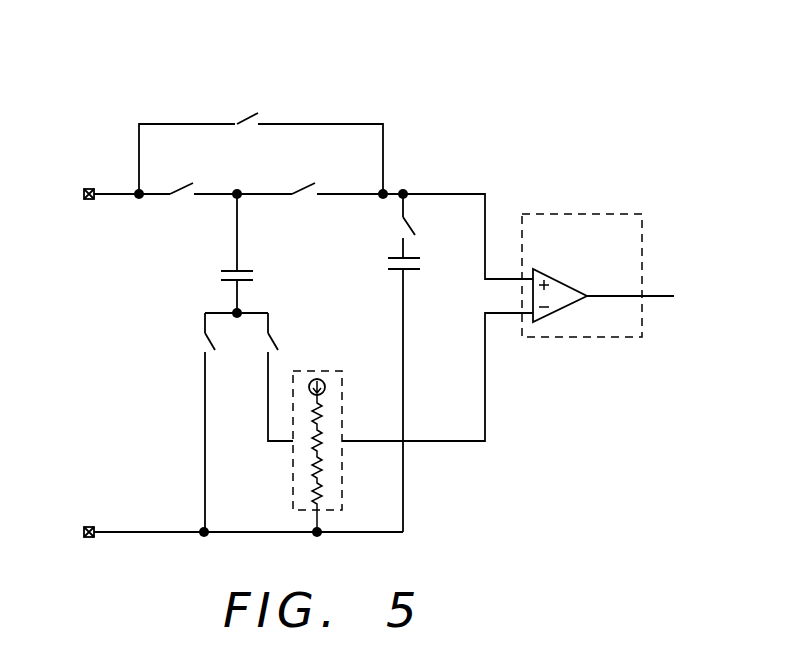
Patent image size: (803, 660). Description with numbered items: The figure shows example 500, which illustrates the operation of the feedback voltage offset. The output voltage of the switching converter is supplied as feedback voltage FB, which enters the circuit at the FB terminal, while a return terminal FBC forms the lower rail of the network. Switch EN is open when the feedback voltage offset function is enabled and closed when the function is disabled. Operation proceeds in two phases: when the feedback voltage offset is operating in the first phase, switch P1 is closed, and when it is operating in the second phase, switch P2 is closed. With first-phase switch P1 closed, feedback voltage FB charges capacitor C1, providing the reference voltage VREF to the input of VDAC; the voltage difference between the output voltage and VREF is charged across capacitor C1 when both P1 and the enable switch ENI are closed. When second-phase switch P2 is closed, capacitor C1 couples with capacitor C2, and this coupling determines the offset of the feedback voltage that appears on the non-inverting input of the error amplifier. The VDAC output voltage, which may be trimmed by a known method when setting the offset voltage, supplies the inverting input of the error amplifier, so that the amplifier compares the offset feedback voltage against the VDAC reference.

The example operation of the feedback voltage offset 500 is at (146, 72).
The feedback voltage FB is at (92, 206).
The feedback return terminal FBC is at (92, 547).
The Phase 1 switch P1 is at (189, 176).
The Phase 2 switch P2 is at (309, 176).
The switch EN is at (261, 141).
The enable switch ENI is at (431, 226).
The capacitor C1 is at (219, 253).
The capacitor C2 is at (390, 394).
The element VDAC is at (340, 437).